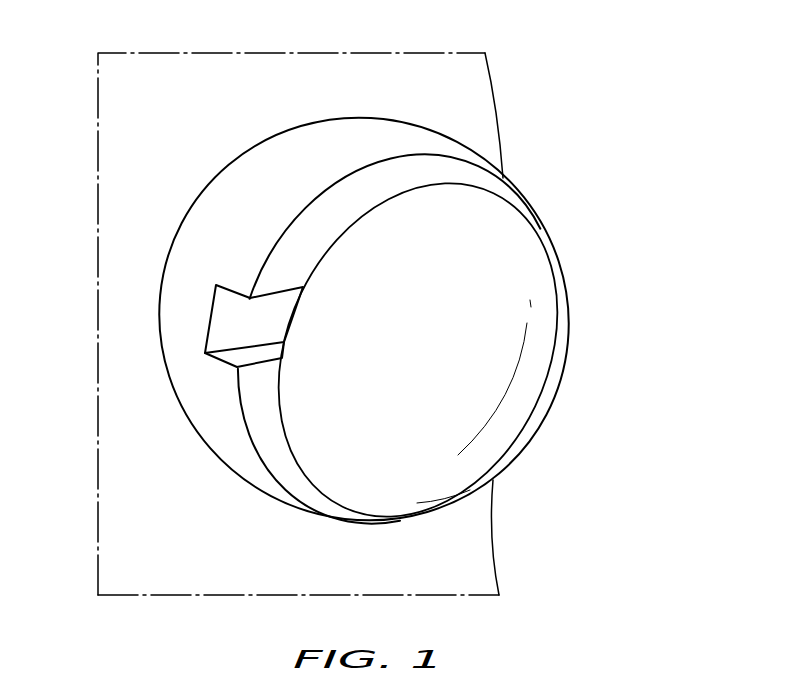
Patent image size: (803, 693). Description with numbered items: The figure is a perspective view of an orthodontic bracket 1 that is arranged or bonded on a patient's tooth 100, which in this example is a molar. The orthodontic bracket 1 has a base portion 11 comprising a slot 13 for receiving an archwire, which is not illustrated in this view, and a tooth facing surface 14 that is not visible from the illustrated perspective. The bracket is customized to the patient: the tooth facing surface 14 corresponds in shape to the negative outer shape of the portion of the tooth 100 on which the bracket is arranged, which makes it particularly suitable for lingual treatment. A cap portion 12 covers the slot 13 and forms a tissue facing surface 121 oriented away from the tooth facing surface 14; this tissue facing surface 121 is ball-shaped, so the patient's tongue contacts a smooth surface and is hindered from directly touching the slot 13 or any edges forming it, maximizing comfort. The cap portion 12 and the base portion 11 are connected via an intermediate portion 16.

The orthodontic bracket 1 is at (374, 320).
The tooth 100 is at (472, 92).
The base portion 11 is at (290, 167).
The cap portion 12 is at (405, 350).
The tissue facing surface 121 is at (323, 423).
The slot 13 is at (232, 320).
The tooth facing surface 14 is at (338, 319).
The intermediate portion 16 is at (322, 495).